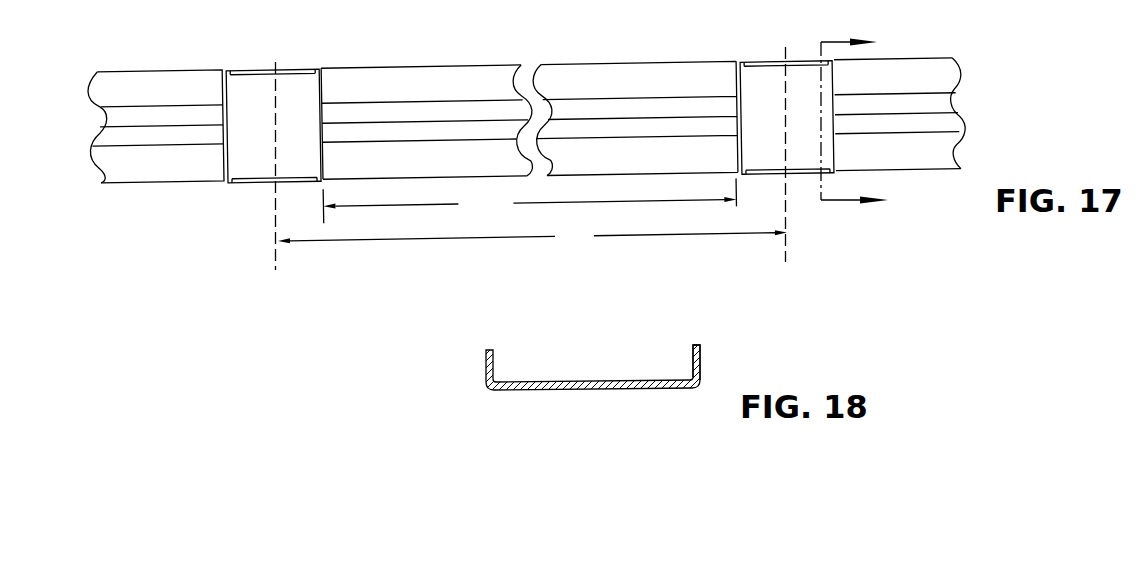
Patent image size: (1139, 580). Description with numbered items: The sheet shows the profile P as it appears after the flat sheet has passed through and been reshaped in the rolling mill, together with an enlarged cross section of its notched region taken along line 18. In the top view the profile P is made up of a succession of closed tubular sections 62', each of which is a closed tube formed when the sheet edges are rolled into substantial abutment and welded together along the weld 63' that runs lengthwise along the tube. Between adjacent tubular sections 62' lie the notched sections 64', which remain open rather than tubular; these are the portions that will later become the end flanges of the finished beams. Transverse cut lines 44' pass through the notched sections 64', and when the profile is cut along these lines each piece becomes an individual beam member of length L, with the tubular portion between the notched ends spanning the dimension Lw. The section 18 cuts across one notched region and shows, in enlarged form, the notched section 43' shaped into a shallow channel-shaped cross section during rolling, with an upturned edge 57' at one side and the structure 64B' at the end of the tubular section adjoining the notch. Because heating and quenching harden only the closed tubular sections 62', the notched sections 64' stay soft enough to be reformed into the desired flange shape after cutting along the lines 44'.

In FIG. 17, the profile P is at (540, 36).
In FIG. 17, the closed tubular sections 62' is at (529, 105).
In FIG. 17, the weld 63' is at (425, 77).
In FIG. 17, the cut lines 44' is at (520, 137).
In FIG. 17, the block rim 64B' is at (319, 53).
In FIG. 17, the notched sections 64' is at (770, 45).
In FIG. 17, the section line 18— 18 is at (897, 212).
In FIG. 17, the length dimension Lw is at (530, 200).
In FIG. 17, the length of beam member L is at (532, 241).
In FIG. 18, the notched sections 43' is at (557, 354).
In FIG. 18, the channel flange 57' is at (729, 348).